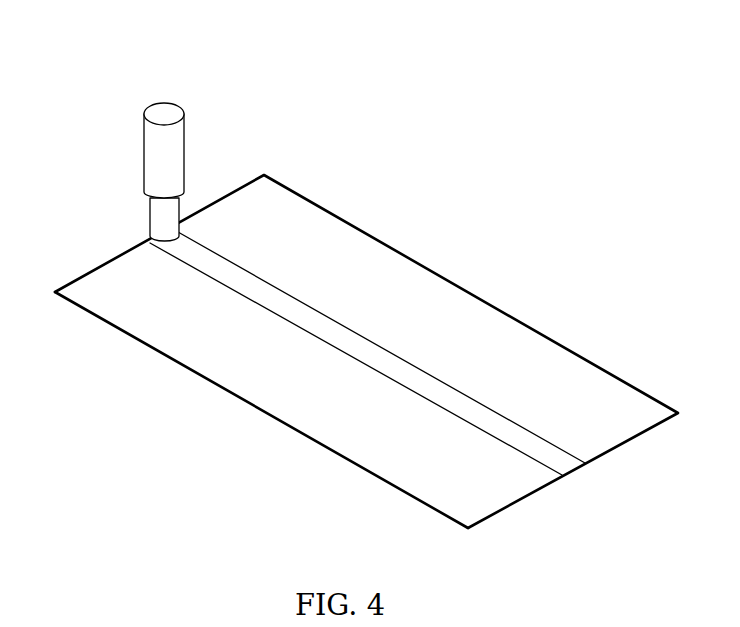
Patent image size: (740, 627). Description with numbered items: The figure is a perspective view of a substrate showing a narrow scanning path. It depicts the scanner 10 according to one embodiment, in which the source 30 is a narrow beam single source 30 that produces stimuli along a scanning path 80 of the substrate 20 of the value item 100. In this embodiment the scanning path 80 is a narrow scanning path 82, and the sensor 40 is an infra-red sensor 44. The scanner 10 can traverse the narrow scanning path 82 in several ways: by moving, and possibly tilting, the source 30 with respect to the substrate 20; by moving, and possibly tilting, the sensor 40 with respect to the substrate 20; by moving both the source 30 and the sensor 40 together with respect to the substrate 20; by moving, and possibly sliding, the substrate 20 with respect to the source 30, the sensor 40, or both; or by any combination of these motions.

The scanner 10 is at (353, 336).
The substrate 20 is at (300, 405).
The source 30 is at (150, 218).
The sensor 40 is at (198, 108).
The infra-red sensor 44 is at (158, 105).
The scanning path 80 is at (367, 320).
The narrow scanning path 82 is at (463, 400).
The value item 100 is at (173, 337).